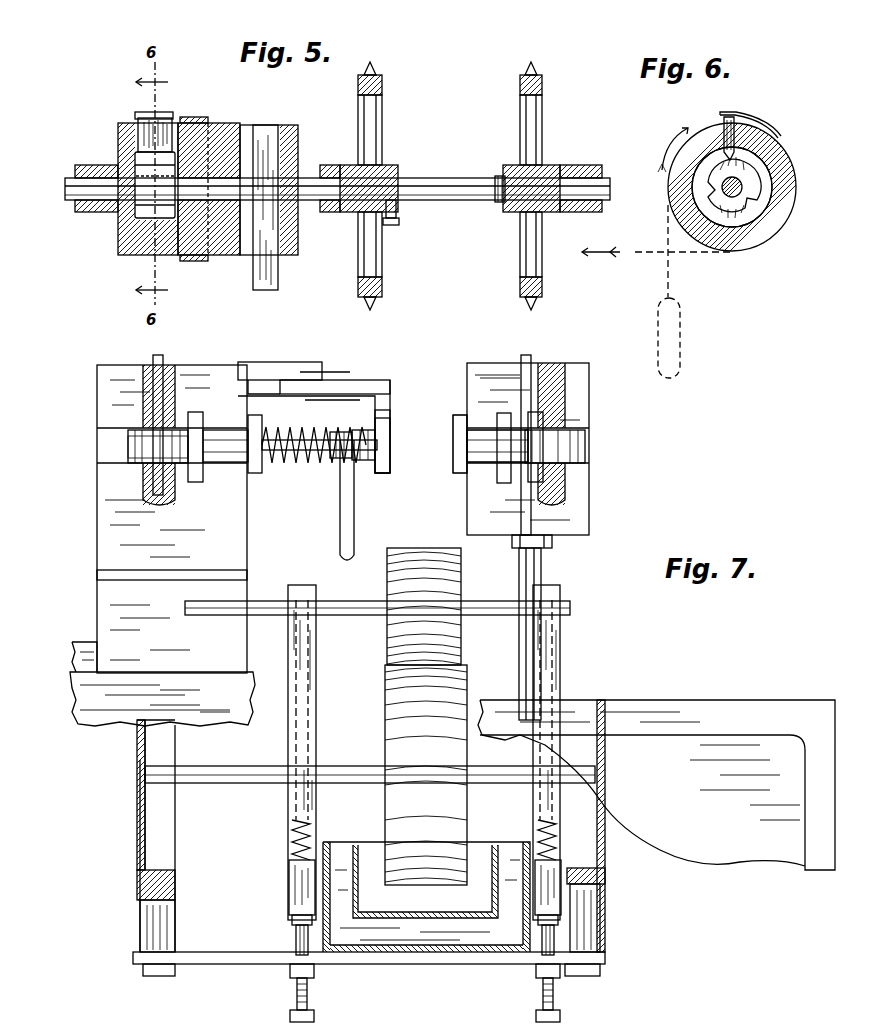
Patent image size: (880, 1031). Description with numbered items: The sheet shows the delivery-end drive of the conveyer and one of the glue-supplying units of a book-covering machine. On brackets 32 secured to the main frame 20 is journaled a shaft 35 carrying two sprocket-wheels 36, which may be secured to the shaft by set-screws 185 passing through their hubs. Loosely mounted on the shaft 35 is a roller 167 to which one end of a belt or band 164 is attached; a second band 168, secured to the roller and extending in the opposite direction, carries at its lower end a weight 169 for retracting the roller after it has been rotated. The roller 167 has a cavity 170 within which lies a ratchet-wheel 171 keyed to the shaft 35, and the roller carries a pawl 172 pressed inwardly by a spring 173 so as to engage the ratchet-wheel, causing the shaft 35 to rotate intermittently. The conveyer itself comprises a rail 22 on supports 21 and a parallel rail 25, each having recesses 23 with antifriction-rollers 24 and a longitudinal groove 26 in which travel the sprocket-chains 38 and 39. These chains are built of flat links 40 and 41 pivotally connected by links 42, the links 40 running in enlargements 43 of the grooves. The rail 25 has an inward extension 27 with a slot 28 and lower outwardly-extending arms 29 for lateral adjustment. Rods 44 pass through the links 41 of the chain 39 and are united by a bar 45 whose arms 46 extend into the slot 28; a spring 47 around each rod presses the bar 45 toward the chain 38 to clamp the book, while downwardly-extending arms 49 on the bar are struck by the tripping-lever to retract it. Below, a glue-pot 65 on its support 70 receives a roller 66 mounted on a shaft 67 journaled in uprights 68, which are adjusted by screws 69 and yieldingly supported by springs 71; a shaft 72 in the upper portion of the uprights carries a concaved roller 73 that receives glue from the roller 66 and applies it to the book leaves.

In FIG. 7, the main frame 20 is at (110, 726).
In FIG. 7, the supports 21 is at (542, 568).
In FIG. 7, the rail 22 is at (528, 449).
In FIG. 7, the recesses 23 is at (112, 448).
In FIG. 7, the antifriction-roller 24 is at (135, 450).
In FIG. 7, the rail 25 is at (172, 527).
In FIG. 7, the longitudinal groove 26 is at (255, 468).
In FIG. 7, the inward extension 27 is at (290, 380).
In FIG. 7, the slot 28 is at (256, 380).
In FIG. 7, the outwardly-extending arms 29 is at (80, 648).
In FIG. 5, the brackets 32 is at (82, 207).
In FIG. 5, the shaft 35 is at (337, 177).
In FIG. 6, the shaft 35 is at (722, 190).
In FIG. 5, the sprocket-wheels 36 is at (520, 110).
In FIG. 7, the sprocket-chain 38 is at (465, 440).
In FIG. 7, the sprocket-chain 39 is at (265, 472).
In FIG. 7, the links 40 is at (196, 412).
In FIG. 7, the links 41 is at (455, 426).
In FIG. 7, the links 42 is at (222, 432).
In FIG. 7, the enlargements 43 is at (196, 482).
In FIG. 7, the rods 44 is at (312, 458).
In FIG. 7, the bar 45 is at (388, 454).
In FIG. 7, the arms 46 is at (356, 394).
In FIG. 7, the spring 47 is at (375, 398).
In FIG. 7, the downwardly-extending arms 49 is at (354, 505).
In FIG. 7, the glue-pot 65 is at (330, 845).
In FIG. 7, the roller 66 is at (392, 708).
In FIG. 7, the shaft 67 is at (348, 772).
In FIG. 7, the uprights 68 is at (316, 672).
In FIG. 7, the screws 69 is at (308, 998).
In FIG. 7, the support 70 is at (240, 952).
In FIG. 7, the springs 71 is at (292, 842).
In FIG. 7, the shaft 72 is at (340, 612).
In FIG. 7, the concaved roller 73 is at (448, 590).
In FIG. 5, the belt or band 164 is at (194, 117).
In FIG. 5, the roller 167 is at (218, 124).
In FIG. 6, the roller 167 is at (785, 196).
In FIG. 5, the band or belt 168 is at (270, 272).
In FIG. 6, the band or belt 168 is at (670, 282).
In FIG. 6, the weight 169 is at (675, 346).
In FIG. 5, the cavity 170 is at (135, 228).
In FIG. 6, the cavity 170 is at (742, 222).
In FIG. 5, the ratchet-wheel 171 is at (150, 180).
In FIG. 6, the ratchet-wheel 171 is at (758, 182).
In FIG. 5, the pawl 172 is at (138, 134).
In FIG. 6, the pawl 172 is at (765, 130).
In FIG. 5, the spring 173 is at (150, 113).
In FIG. 6, the spring 173 is at (750, 114).
In FIG. 5, the set-screws 185 is at (400, 220).